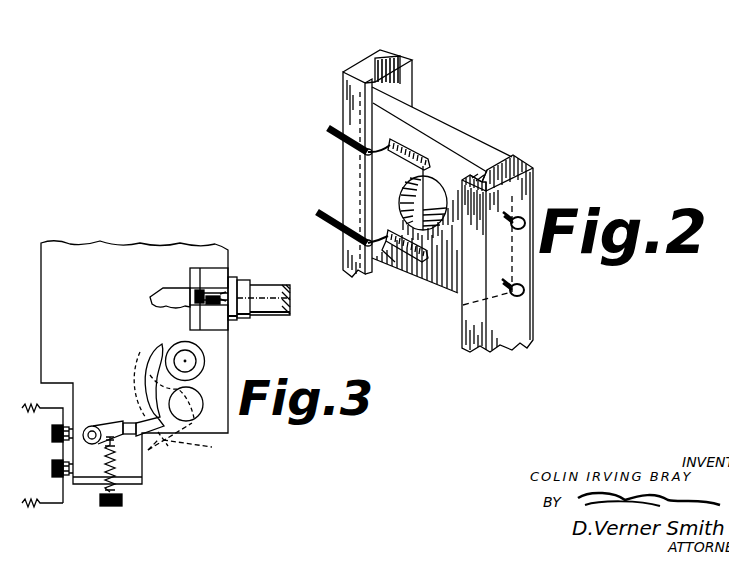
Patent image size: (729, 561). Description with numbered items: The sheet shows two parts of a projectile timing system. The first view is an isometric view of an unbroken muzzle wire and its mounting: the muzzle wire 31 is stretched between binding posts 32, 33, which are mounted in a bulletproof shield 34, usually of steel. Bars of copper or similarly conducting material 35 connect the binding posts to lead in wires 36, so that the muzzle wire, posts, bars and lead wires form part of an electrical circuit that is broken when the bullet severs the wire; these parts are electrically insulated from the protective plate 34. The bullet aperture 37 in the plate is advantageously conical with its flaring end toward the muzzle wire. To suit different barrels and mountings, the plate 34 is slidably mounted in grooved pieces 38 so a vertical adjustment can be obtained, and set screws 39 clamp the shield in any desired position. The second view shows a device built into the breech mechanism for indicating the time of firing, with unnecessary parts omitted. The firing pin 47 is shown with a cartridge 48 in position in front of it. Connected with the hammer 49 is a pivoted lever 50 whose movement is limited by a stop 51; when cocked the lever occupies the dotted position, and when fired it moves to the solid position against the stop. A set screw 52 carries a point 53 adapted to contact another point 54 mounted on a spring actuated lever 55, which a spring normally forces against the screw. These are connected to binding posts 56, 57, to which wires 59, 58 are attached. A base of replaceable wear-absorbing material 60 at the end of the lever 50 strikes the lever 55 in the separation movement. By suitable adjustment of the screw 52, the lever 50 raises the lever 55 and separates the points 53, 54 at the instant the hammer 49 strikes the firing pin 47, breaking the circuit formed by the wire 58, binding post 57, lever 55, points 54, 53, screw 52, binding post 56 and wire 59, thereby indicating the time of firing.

In FIG. 2, the muzzle wire 31 is at (455, 275).
In FIG. 2, the binding post 32 is at (437, 186).
In FIG. 2, the binding post 33 is at (415, 258).
In FIG. 2, the bulletproof shield 34 is at (470, 142).
In FIG. 2, the conducting bars 35 is at (408, 147).
In FIG. 2, the lead-in wires 36 is at (345, 222).
In FIG. 2, the bullet aperture 37 is at (490, 172).
In FIG. 2, the grooved pieces 38 is at (385, 52).
In FIG. 2, the set screws 39 is at (524, 290).
In FIG. 3, the firing pin 47 is at (233, 281).
In FIG. 3, the cartridge 48 is at (245, 284).
In FIG. 3, the hammer 49 is at (172, 292).
In FIG. 3, the pivoted lever 50 is at (208, 447).
In FIG. 3, the stop 51 is at (197, 361).
In FIG. 3, the set screw 52 is at (136, 506).
In FIG. 3, the point 53 is at (174, 454).
In FIG. 3, the point 54 is at (110, 441).
In FIG. 3, the spring actuated lever 55 is at (112, 426).
In FIG. 3, the binding post 56 is at (52, 468).
In FIG. 3, the binding post 57 is at (52, 433).
In FIG. 3, the wire 58 is at (50, 407).
In FIG. 3, the wire 59 is at (47, 505).
In FIG. 3, the wear-absorbing base 60 is at (128, 428).